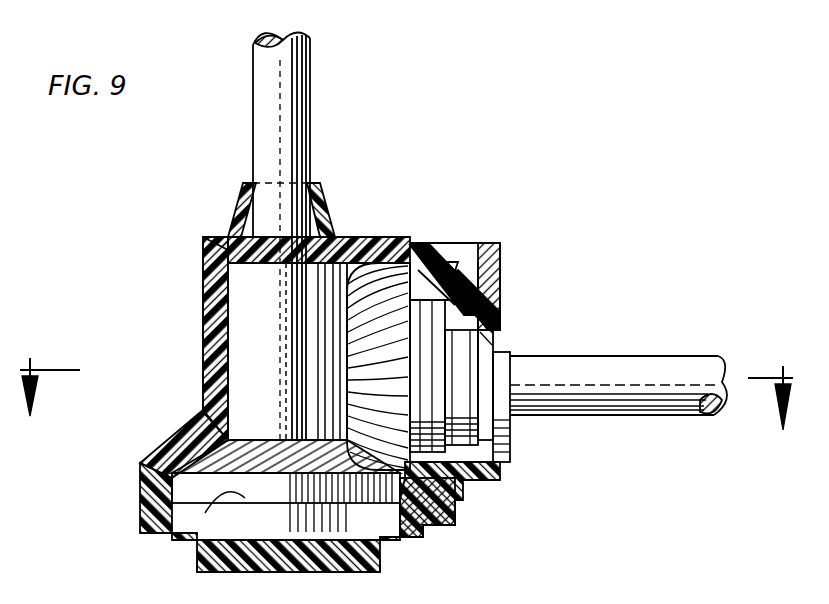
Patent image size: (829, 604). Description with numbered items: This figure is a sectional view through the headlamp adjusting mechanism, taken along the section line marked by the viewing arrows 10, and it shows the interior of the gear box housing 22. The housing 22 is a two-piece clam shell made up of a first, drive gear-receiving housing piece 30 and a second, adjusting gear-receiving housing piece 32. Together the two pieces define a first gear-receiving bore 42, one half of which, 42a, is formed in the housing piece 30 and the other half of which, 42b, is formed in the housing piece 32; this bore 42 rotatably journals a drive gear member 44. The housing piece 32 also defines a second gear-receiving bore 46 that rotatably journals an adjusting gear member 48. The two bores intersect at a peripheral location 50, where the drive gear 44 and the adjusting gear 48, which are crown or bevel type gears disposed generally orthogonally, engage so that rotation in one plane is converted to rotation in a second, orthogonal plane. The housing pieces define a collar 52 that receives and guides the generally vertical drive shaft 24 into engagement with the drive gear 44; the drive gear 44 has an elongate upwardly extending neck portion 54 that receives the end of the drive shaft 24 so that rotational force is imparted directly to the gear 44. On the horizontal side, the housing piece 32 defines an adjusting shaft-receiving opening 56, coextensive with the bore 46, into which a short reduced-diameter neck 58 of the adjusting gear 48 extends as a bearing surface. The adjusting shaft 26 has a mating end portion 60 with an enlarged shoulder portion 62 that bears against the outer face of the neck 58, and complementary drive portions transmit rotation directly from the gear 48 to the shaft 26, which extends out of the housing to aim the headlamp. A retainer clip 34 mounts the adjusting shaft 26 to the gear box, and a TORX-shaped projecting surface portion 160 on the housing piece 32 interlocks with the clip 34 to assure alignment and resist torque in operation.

The section line / viewing direction arrows 10 is at (408, 410).
The gear box housing 22 is at (276, 288).
The drive shaft 24 is at (265, 110).
The adjusting shaft 26 is at (668, 372).
The first housing piece 30 is at (200, 290).
The second housing piece 32 is at (380, 252).
The retainer clip 34 is at (474, 240).
The first gear-receiving bore 42 is at (296, 533).
The complementary part of first gear-receiving bore 42a is at (210, 566).
The complementary part of first gear-receiving bore 42b is at (372, 558).
The drive gear member 44 is at (205, 468).
The second gear-receiving bore 46 is at (400, 300).
The adjusting gear member 48 is at (450, 494).
The intersection of bores 50 is at (340, 420).
The drive shaft receiving collar 52 is at (240, 205).
The neck portion 54 is at (240, 358).
The adjusting shaft-receiving opening 56 is at (497, 458).
The neck portion 58 is at (415, 340).
The mating end portion 60 is at (465, 330).
The shoulder portion 62 is at (435, 365).
The projecting surface portion 160 is at (492, 270).